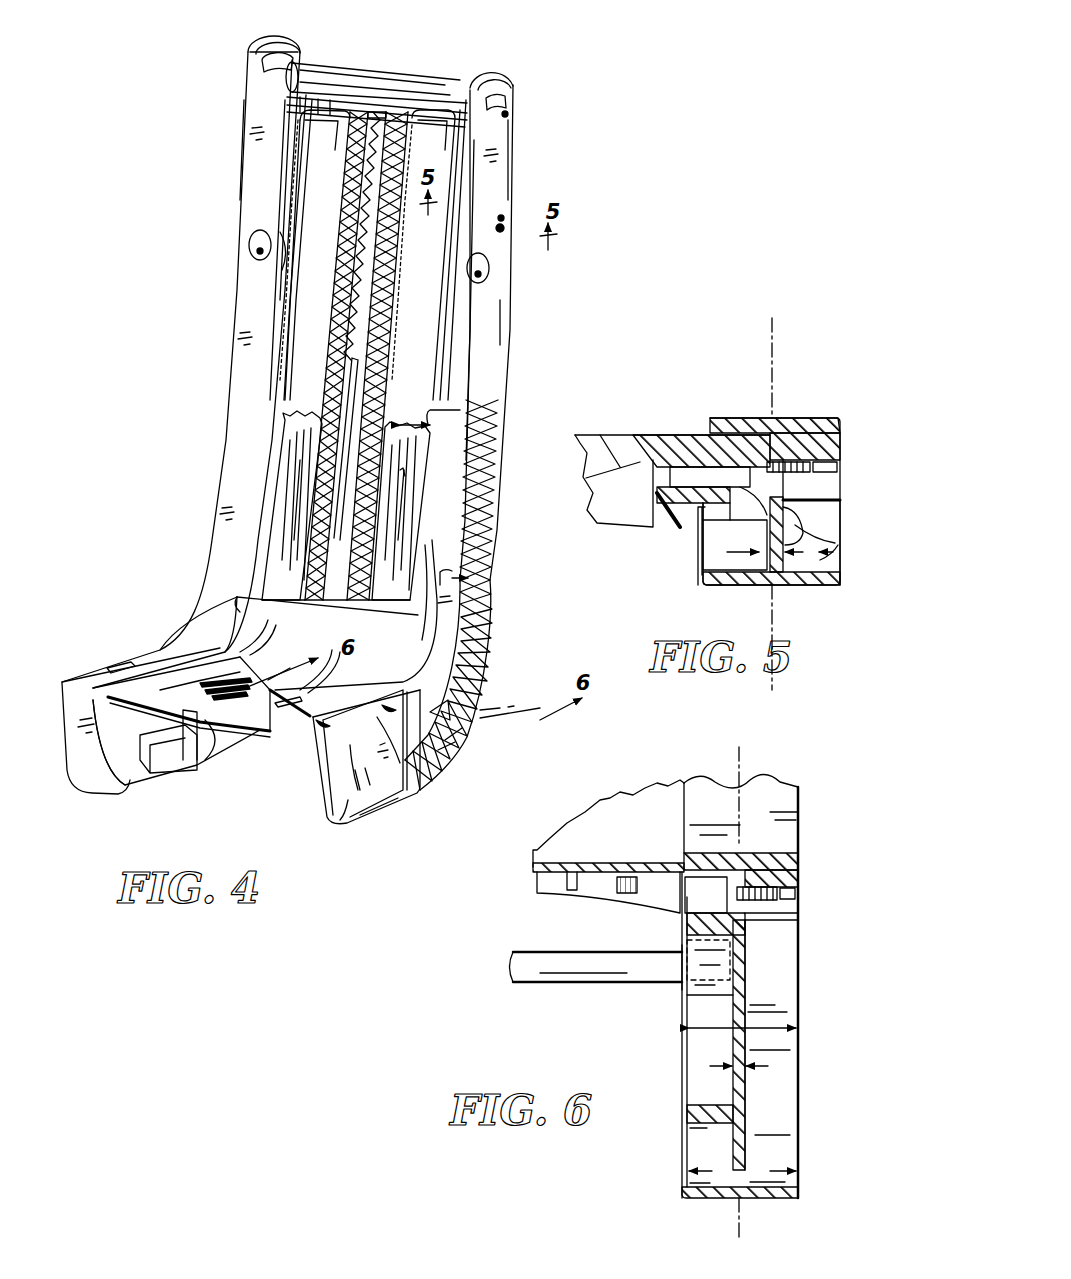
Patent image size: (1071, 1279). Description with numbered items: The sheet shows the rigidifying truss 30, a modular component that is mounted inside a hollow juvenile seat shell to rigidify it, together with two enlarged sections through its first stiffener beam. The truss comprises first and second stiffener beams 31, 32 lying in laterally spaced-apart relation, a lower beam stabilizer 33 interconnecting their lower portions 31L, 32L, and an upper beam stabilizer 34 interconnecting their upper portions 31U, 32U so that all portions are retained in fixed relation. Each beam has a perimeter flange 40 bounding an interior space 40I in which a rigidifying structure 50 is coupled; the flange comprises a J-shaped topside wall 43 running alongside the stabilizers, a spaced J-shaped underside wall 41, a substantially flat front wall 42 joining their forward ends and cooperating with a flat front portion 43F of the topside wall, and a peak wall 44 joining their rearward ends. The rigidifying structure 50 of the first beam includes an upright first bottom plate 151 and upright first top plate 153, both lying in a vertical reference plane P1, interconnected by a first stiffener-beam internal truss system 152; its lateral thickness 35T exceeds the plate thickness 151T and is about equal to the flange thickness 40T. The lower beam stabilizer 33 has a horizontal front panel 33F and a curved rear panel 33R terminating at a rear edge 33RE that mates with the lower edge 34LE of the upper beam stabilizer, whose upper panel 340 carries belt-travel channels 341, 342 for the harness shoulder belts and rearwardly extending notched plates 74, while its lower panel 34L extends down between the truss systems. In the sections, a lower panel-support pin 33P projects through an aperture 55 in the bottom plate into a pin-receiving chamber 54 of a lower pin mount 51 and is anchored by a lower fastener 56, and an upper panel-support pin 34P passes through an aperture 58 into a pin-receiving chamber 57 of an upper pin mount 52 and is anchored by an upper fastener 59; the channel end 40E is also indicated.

In FIG. 4, the rigidifying truss 30 is at (172, 283).
In FIG. 4, the first stiffener beam 31 is at (515, 355).
In FIG. 4, the upper portion of first stiffener beam 31U is at (520, 155).
In FIG. 5, the upper portion of first stiffener beam 31U is at (842, 598).
In FIG. 4, the lower portion of first stiffener beam 31L is at (368, 820).
In FIG. 6, the lower portion of first stiffener beam 31L is at (675, 1080).
In FIG. 4, the second stiffener beam 32 is at (212, 498).
In FIG. 4, the upper portion of second stiffener beam 32U is at (235, 190).
In FIG. 4, the lower portion of second stiffener beam 32L is at (118, 655).
In FIG. 4, the lower beam stabilizer 33 is at (263, 745).
In FIG. 6, the lower beam stabilizer 33 is at (610, 796).
In FIG. 4, the front panel 33F is at (115, 732).
In FIG. 6, the front panel 33F is at (590, 863).
In FIG. 4, the rear panel 33R is at (240, 606).
In FIG. 4, the rear edge 33RE is at (300, 598).
In FIG. 6, the lower panel-support pin 33P is at (798, 860).
In FIG. 4, the upper beam stabilizer 34 is at (418, 65).
In FIG. 5, the upper beam stabilizer 34 is at (638, 431).
In FIG. 4, the lower panel 34L is at (400, 467).
In FIG. 4, the lower edge 34LE is at (326, 616).
In FIG. 5, the upper panel-support pin 34P is at (788, 418).
In FIG. 4, the lateral thickness 35T is at (470, 618).
In FIG. 6, the lateral thickness 35T is at (705, 1043).
In FIG. 4, the perimeter flange 40 is at (252, 317).
In FIG. 5, the perimeter flange 40 is at (752, 410).
In FIG. 6, the perimeter flange 40 is at (717, 846).
In FIG. 4, the lateral thickness of perimeter flange 40T is at (470, 405).
In FIG. 6, the lateral thickness of perimeter flange 40T is at (687, 1165).
In FIG. 5, the channel end 40E is at (840, 557).
In FIG. 6, the interior space 40I is at (708, 1130).
In FIG. 4, the J-shaped underside wall 41 is at (178, 763).
In FIG. 5, the J-shaped underside wall 41 is at (743, 590).
In FIG. 6, the J-shaped underside wall 41 is at (763, 1198).
In FIG. 4, the front wall 42 is at (78, 745).
In FIG. 4, the J-shaped topside wall 43 is at (225, 450).
In FIG. 5, the J-shaped topside wall 43 is at (798, 418).
In FIG. 6, the J-shaped topside wall 43 is at (753, 850).
In FIG. 4, the flat front portion of J-shaped topside wall 43F is at (82, 672).
In FIG. 4, the peak wall 44 is at (268, 42).
In FIG. 4, the rigidifying structure 50 is at (210, 738).
In FIG. 5, the rigidifying structure 50 is at (838, 509).
In FIG. 6, the rigidifying structure 50 is at (765, 932).
In FIG. 4, the lower pin mount 51 is at (402, 765).
In FIG. 6, the lower pin mount 51 is at (798, 927).
In FIG. 4, the upper pin mount 52 is at (503, 220).
In FIG. 5, the upper pin mount 52 is at (800, 500).
In FIG. 6, the pin-receiving chamber 54 is at (706, 895).
In FIG. 6, the aperture 55 is at (700, 913).
In FIG. 6, the lower fastener 56 is at (790, 893).
In FIG. 5, the pin-receiving chamber 57 is at (687, 530).
In FIG. 5, the aperture 58 is at (750, 493).
In FIG. 5, the upper fastener 59 is at (825, 465).
In FIG. 4, the notched plate 74 is at (295, 345).
In FIG. 4, the upright first bottom plate 151 is at (336, 760).
In FIG. 6, the upright first bottom plate 151 is at (748, 1098).
In FIG. 5, the lateral thickness of upright plates 151T is at (783, 587).
In FIG. 6, the lateral thickness of upright plates 151T is at (763, 1083).
In FIG. 4, the first stiffener-beam internal truss system 152 is at (475, 593).
In FIG. 4, the upright first top plate 153 is at (505, 305).
In FIG. 5, the upright first top plate 153 is at (838, 547).
In FIG. 4, the upper panel 340 is at (380, 105).
In FIG. 4, the belt-travel channel 341 is at (465, 130).
In FIG. 4, the belt-travel channel 342 is at (290, 148).
In FIG. 5, the vertical reference plane P1 is at (776, 328).
In FIG. 6, the vertical reference plane P1 is at (747, 751).